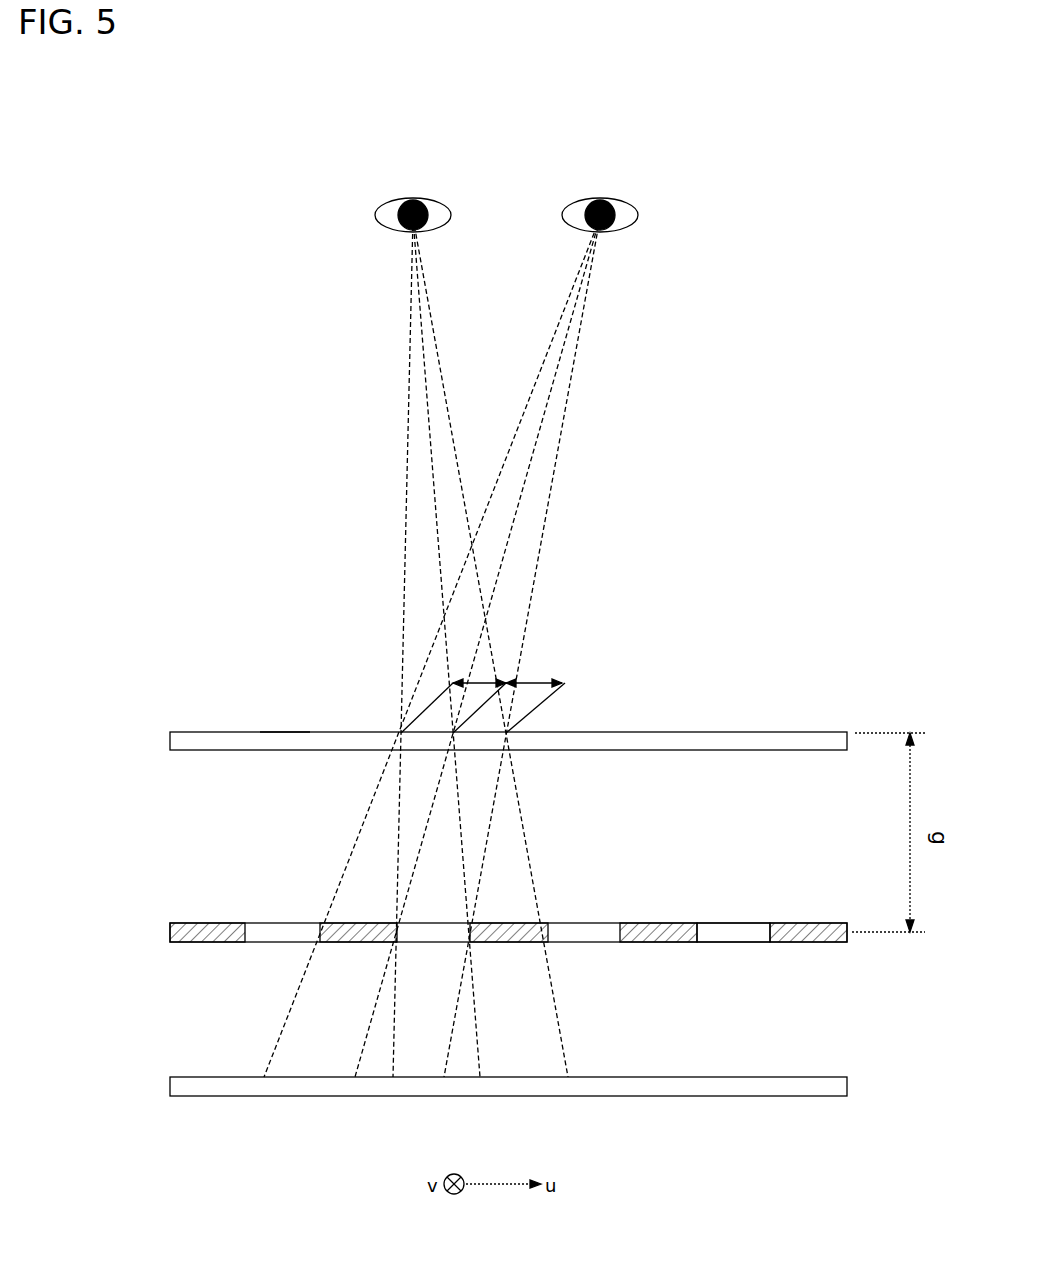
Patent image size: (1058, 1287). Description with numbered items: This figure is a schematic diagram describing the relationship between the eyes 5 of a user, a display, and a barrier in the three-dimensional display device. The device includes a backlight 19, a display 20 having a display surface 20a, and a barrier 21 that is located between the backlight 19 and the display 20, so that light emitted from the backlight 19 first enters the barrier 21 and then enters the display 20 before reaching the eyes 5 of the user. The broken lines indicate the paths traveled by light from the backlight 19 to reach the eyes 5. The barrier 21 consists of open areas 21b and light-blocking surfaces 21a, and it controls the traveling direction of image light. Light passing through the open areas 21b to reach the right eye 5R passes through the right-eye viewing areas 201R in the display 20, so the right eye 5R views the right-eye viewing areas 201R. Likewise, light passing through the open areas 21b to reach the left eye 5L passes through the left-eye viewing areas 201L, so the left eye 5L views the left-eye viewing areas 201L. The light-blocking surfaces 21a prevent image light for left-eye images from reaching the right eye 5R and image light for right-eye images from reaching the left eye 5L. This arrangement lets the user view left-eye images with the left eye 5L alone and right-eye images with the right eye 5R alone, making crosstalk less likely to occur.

The eyes 5 is at (555, 150).
The right eye 5R is at (432, 203).
The left eye 5L is at (584, 203).
The backlight 19 is at (170, 1087).
The display 20 is at (170, 740).
The display surface 20a is at (283, 733).
The right-eye viewing areas 201R is at (472, 683).
The left-eye viewing areas 201L is at (544, 685).
The barrier 21 is at (170, 932).
The light-blocking surfaces 21a is at (808, 936).
The open areas 21b is at (734, 936).